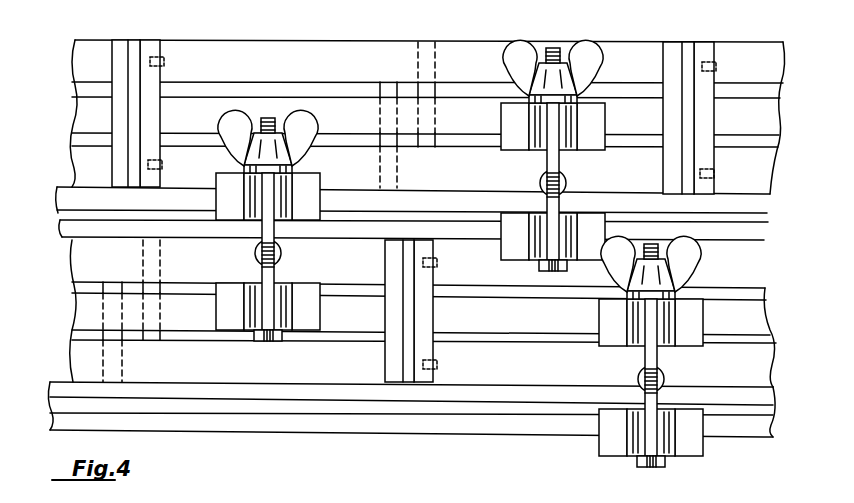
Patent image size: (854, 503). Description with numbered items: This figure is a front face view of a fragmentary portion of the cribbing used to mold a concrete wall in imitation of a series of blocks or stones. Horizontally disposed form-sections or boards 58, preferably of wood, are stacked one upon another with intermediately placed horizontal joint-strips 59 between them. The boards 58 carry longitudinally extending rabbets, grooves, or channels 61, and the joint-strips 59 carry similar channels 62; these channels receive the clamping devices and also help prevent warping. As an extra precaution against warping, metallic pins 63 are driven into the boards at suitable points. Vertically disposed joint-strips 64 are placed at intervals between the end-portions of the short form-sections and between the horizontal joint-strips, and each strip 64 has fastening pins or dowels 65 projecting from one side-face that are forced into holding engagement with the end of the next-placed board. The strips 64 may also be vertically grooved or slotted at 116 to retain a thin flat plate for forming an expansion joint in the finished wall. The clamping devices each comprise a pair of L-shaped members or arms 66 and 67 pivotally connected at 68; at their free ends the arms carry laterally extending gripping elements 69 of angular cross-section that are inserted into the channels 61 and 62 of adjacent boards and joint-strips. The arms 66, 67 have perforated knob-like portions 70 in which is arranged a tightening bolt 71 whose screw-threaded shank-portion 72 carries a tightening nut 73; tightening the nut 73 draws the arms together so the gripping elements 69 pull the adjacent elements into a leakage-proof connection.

The form-section board 58 is at (348, 53).
The horizontal joint-strip 59 is at (77, 193).
The rabbet, groove, or channel of board 61 is at (82, 138).
The rabbet, groove, or channel of joint-strip 62 is at (72, 246).
The metallic pin 63 is at (396, 170).
The vertically disposed joint-strip 64 is at (154, 46).
The fastening pin or dowel 65 is at (168, 58).
The L-shaped clamping arm 66 is at (268, 213).
The L-shaped clamping arm 67 is at (270, 284).
The pivotal connection 68 is at (282, 257).
The gripping element 69 is at (720, 317).
The perforated knob-like portion 70 is at (250, 287).
The tightening bolt 71 is at (263, 342).
The screw-threaded shank-portion 72 is at (270, 117).
The tightening nut 73 is at (304, 132).
The vertical groove or slot 116 is at (135, 53).